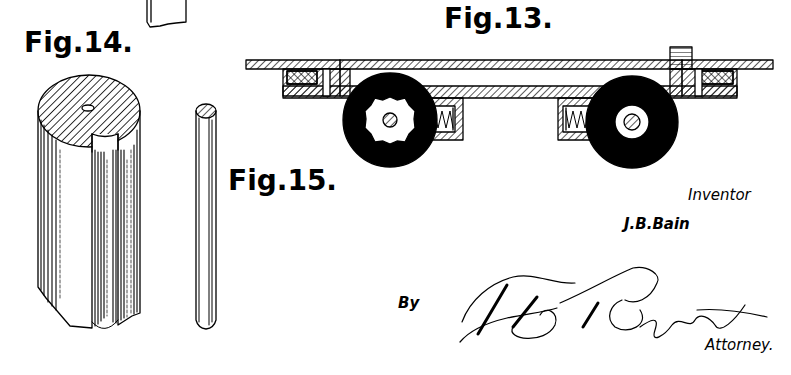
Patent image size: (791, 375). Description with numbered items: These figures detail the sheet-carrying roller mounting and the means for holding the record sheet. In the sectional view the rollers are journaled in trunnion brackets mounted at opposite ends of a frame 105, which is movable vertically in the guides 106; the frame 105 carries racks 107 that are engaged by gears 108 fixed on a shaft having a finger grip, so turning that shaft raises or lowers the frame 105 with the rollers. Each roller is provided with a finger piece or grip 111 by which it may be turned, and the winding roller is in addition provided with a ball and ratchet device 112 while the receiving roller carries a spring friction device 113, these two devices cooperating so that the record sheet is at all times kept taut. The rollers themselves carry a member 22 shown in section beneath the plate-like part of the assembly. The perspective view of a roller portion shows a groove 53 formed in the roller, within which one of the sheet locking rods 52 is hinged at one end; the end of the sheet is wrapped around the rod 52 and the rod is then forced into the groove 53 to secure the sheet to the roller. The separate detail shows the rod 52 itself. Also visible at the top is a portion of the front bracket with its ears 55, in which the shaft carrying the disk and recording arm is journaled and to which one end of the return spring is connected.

In FIG. 13, the plate 22 is at (506, 60).
In FIG. 15, the rod 52 is at (199, 214).
In FIG. 13, the rod 52 is at (503, 13).
In FIG. 14, the groove 53 is at (97, 318).
In FIG. 13, the ear 55 is at (344, 6).
In FIG. 13, the frame 105 is at (330, 98).
In FIG. 13, the guide 106 is at (285, 79).
In FIG. 13, the rack 107 is at (345, 50).
In FIG. 13, the gear 108 is at (686, 48).
In FIG. 13, the finger piece or grip 111 is at (418, 158).
In FIG. 13, the ball and ratchet device 112 is at (390, 141).
In FIG. 13, the spring friction device 113 is at (562, 140).